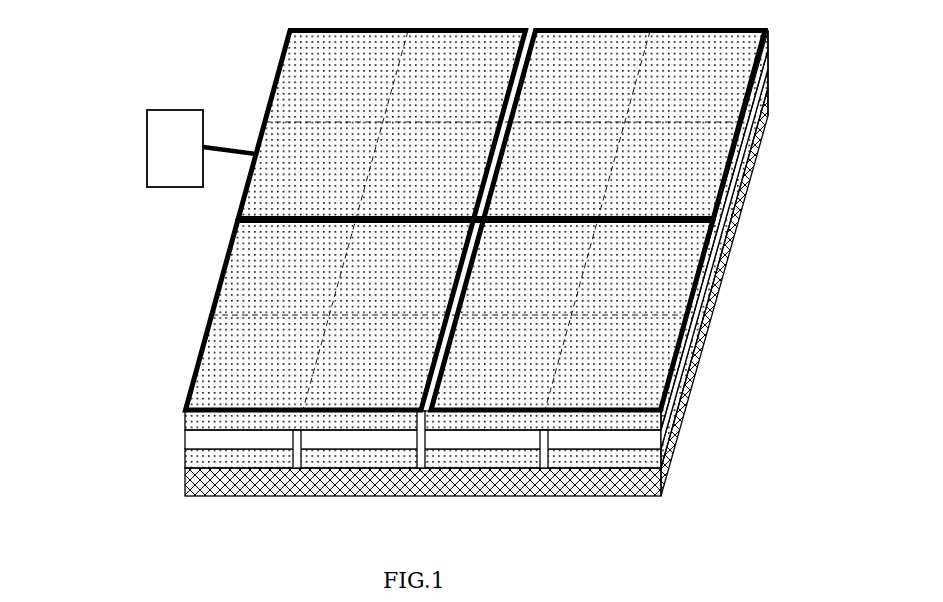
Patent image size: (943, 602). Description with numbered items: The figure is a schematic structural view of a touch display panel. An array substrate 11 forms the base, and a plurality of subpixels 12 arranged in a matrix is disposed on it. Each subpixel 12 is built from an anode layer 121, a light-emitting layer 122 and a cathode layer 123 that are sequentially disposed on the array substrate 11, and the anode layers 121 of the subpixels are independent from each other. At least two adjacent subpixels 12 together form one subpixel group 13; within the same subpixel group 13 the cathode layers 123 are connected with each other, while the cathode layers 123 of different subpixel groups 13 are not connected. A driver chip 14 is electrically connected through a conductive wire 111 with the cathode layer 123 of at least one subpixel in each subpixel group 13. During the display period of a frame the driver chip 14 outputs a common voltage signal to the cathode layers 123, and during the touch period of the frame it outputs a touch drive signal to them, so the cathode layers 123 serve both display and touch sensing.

The array substrate 11 is at (632, 481).
The subpixel 12 is at (313, 182).
The subpixel group 13 is at (215, 287).
The driver chip 14 is at (175, 148).
The conductive wire 111 is at (233, 150).
The anode layer 121 is at (185, 461).
The light-emitting layer 122 is at (185, 441).
The cathode layer 123 is at (185, 422).